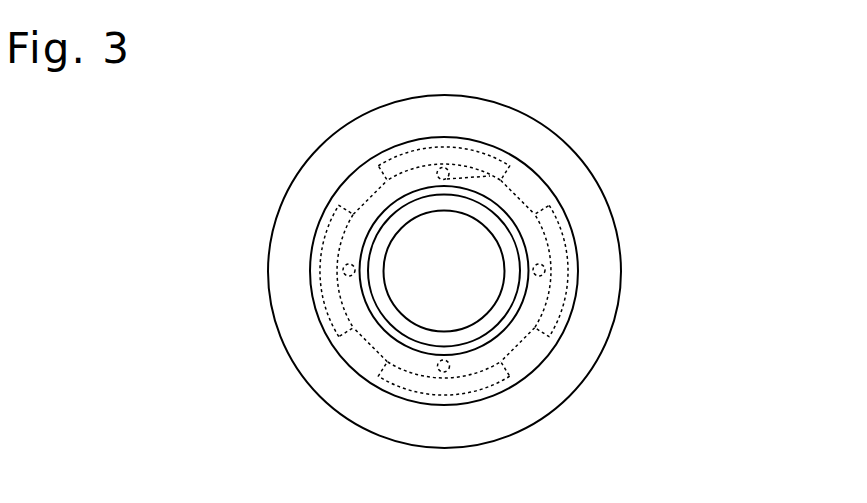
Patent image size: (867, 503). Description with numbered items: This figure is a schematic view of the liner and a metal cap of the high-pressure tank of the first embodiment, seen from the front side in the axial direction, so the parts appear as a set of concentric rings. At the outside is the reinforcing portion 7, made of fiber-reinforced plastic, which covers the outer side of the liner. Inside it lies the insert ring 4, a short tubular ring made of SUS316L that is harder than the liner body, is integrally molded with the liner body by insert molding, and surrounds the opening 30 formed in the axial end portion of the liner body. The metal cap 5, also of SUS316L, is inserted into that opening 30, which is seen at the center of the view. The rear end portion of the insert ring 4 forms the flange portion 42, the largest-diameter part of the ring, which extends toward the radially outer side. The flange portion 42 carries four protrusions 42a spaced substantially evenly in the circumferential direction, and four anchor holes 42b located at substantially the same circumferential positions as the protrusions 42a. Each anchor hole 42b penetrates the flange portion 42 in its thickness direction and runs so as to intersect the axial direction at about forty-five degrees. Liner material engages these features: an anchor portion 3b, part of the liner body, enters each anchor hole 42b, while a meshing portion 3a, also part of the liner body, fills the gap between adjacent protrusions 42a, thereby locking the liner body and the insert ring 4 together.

The reinforcing portion 7 is at (305, 188).
The insert ring 4 is at (383, 327).
The metal cap 5 is at (493, 318).
The opening 30 is at (472, 250).
The flange portion 42 is at (321, 280).
The protrusion 42a is at (500, 170).
The anchor hole 42b is at (437, 168).
The meshing portion 3a is at (372, 197).
The anchor portion 3b is at (502, 163).